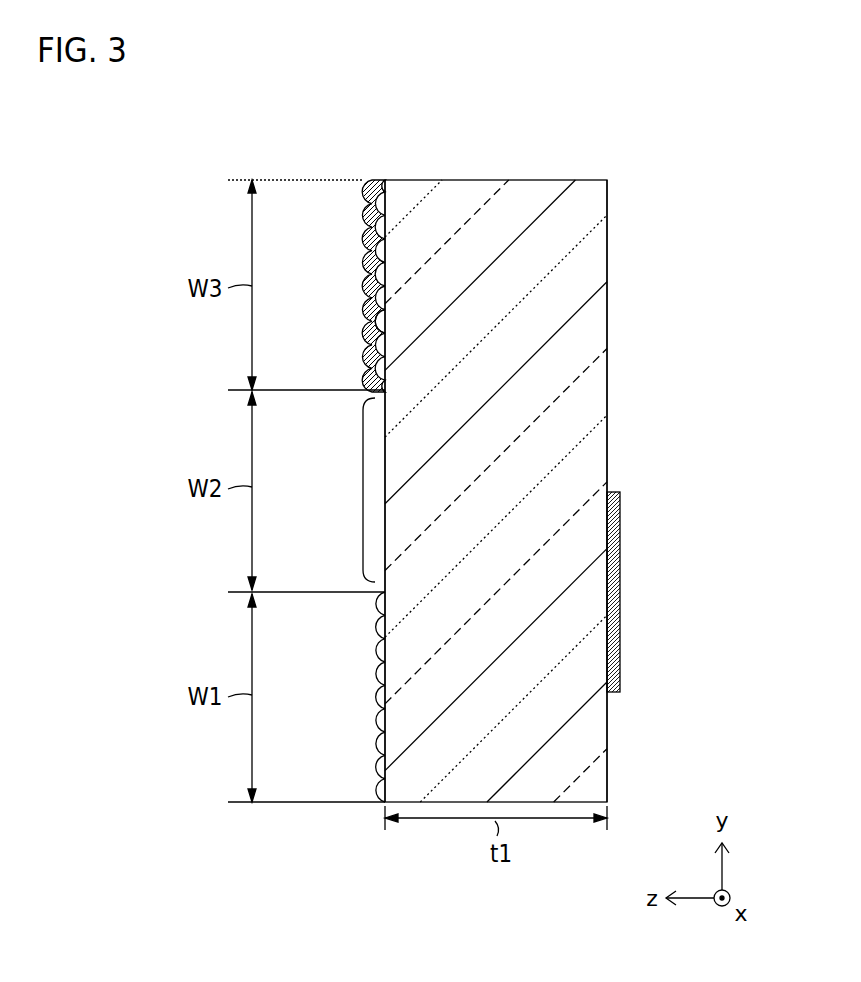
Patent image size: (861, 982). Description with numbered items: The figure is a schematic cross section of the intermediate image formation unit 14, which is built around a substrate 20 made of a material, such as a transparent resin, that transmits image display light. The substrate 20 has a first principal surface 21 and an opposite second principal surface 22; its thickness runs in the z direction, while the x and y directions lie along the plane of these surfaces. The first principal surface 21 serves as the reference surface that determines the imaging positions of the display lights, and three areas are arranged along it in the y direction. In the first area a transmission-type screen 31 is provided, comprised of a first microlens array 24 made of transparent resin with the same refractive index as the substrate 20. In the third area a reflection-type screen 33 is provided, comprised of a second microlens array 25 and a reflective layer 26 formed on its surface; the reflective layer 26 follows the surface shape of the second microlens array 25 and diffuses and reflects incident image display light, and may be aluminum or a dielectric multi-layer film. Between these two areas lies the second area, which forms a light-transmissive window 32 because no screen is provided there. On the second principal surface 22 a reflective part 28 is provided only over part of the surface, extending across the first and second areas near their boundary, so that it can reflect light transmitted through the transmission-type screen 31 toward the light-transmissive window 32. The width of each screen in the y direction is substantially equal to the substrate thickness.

The intermediate image formation unit 14 is at (480, 521).
The substrate 20 is at (484, 205).
The first principal surface 21 is at (377, 180).
The second principal surface 22 is at (615, 186).
The first microlens array 24 is at (372, 656).
The second microlens array 25 is at (367, 355).
The reflective layer 26 is at (365, 318).
The reflective part 28 is at (620, 590).
The transmission-type screen 31 is at (332, 697).
The light-transmissive window 32 is at (362, 493).
The reflection-type screen 33 is at (332, 286).